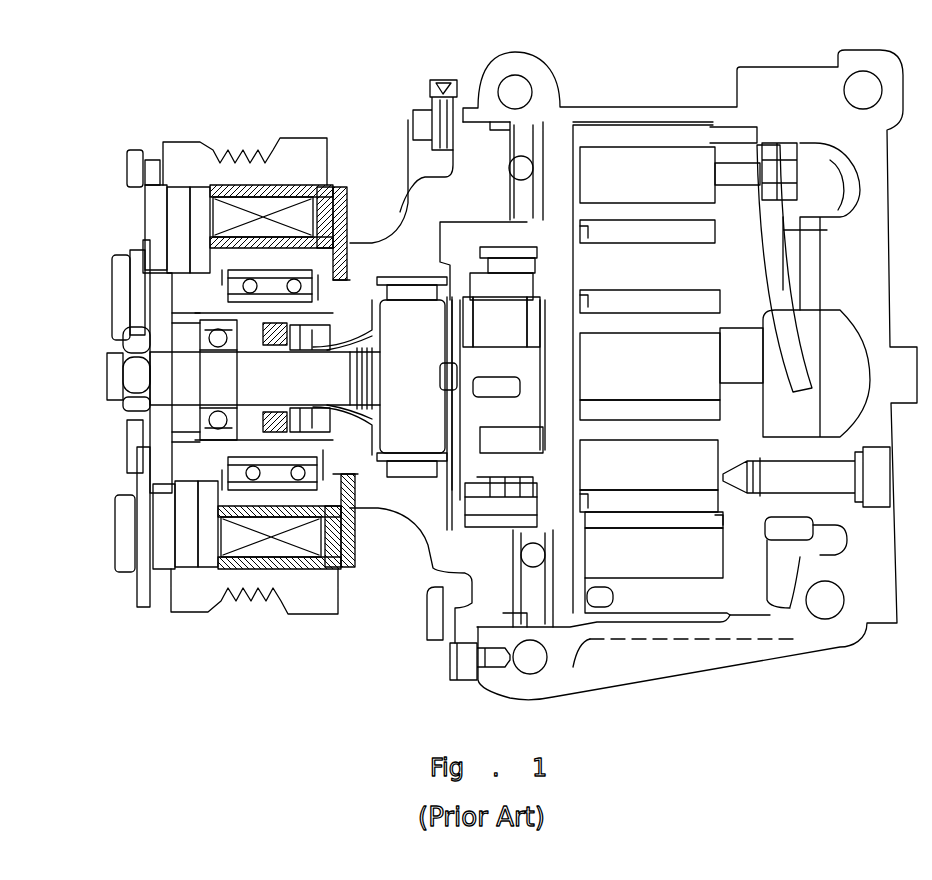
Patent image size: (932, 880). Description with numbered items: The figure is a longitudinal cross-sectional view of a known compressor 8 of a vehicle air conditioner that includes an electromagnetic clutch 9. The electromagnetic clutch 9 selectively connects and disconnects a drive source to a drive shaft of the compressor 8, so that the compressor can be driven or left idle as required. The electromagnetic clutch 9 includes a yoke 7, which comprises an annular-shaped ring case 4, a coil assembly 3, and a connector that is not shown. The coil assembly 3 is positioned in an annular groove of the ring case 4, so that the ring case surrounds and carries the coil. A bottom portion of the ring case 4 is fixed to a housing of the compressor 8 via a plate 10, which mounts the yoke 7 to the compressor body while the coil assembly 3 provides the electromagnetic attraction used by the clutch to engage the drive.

The electromagnetic clutch 9 is at (192, 130).
The coil assembly 3 is at (250, 205).
The yoke 7 is at (292, 178).
The ring case 4 is at (340, 186).
The plate 10 is at (348, 240).
The compressor 8 is at (642, 103).